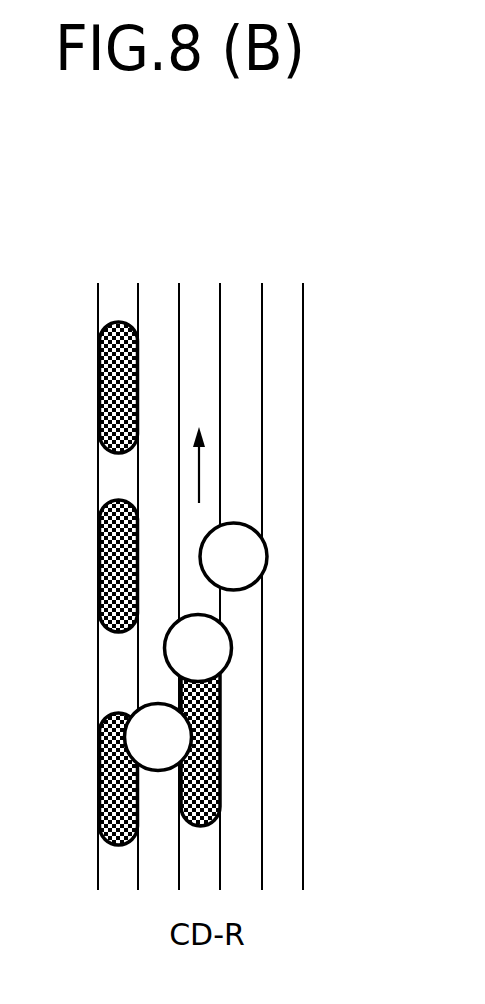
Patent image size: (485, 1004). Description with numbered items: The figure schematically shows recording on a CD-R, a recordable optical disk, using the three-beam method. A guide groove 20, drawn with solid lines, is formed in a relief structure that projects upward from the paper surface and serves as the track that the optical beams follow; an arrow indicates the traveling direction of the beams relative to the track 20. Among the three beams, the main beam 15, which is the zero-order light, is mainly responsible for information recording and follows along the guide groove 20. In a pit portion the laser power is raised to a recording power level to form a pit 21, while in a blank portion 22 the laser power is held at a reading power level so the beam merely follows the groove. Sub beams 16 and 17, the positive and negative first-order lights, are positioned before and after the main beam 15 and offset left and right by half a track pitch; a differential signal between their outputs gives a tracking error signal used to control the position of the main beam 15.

The guide groove 20 is at (287, 297).
The pit 21 is at (110, 397).
The blank portion 22 is at (123, 481).
The main beam 15 is at (220, 650).
The sub beam 16 is at (253, 553).
The sub beam 17 is at (173, 737).